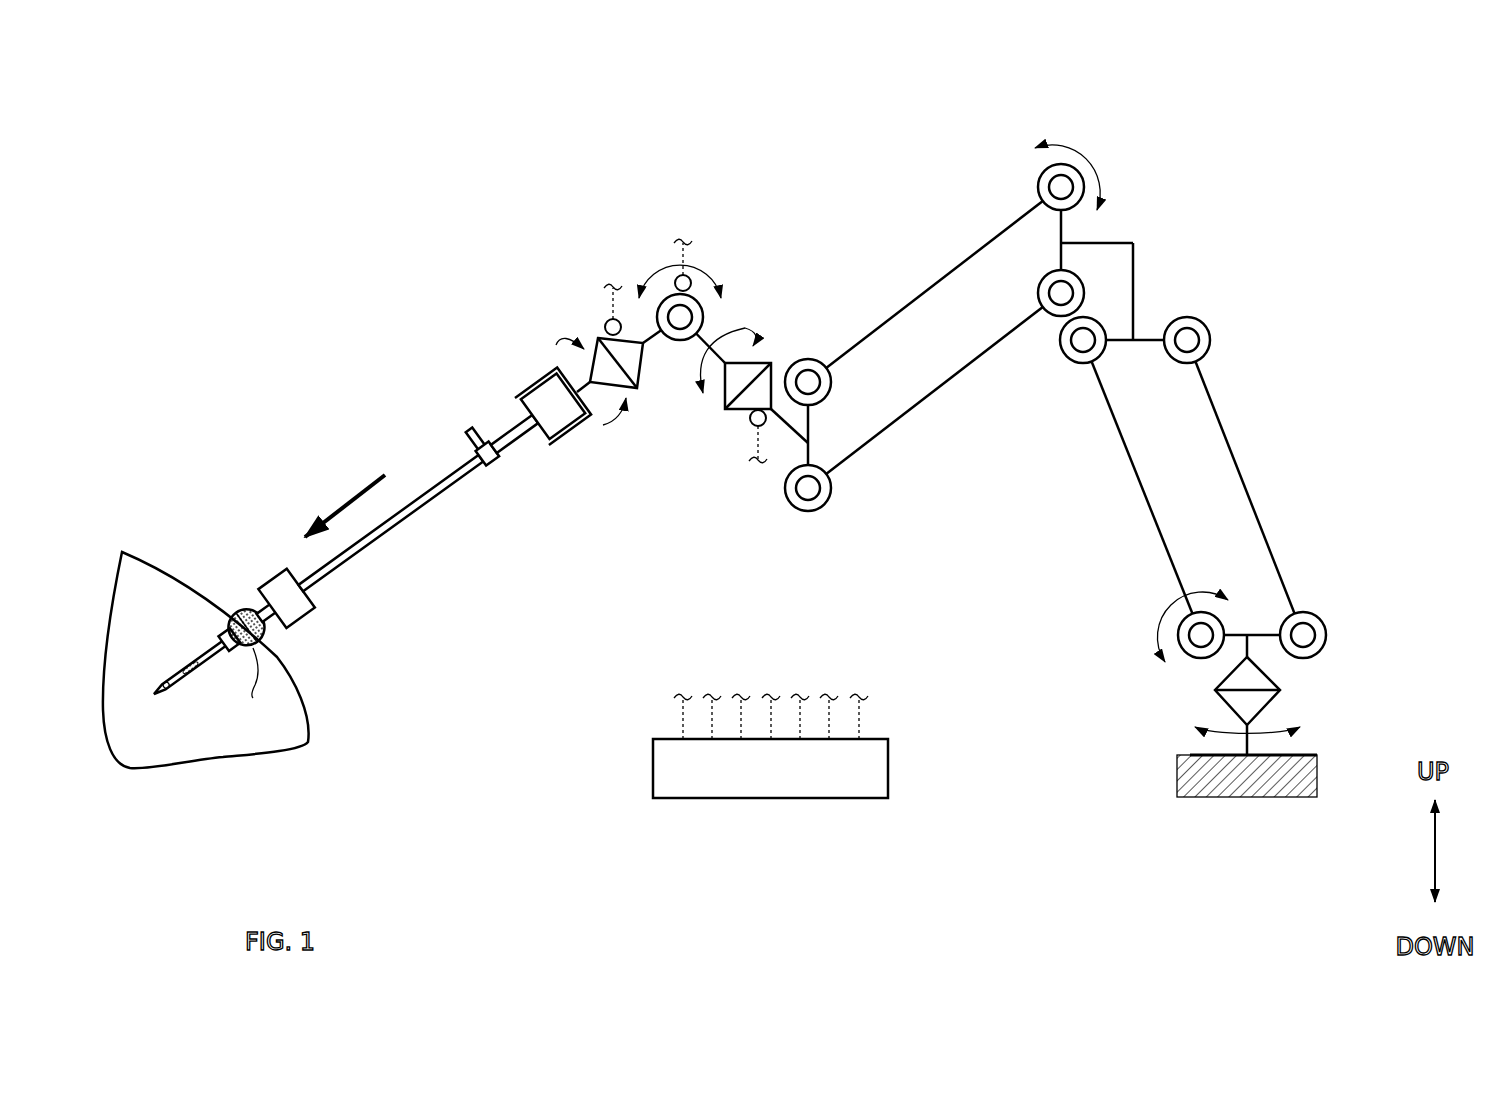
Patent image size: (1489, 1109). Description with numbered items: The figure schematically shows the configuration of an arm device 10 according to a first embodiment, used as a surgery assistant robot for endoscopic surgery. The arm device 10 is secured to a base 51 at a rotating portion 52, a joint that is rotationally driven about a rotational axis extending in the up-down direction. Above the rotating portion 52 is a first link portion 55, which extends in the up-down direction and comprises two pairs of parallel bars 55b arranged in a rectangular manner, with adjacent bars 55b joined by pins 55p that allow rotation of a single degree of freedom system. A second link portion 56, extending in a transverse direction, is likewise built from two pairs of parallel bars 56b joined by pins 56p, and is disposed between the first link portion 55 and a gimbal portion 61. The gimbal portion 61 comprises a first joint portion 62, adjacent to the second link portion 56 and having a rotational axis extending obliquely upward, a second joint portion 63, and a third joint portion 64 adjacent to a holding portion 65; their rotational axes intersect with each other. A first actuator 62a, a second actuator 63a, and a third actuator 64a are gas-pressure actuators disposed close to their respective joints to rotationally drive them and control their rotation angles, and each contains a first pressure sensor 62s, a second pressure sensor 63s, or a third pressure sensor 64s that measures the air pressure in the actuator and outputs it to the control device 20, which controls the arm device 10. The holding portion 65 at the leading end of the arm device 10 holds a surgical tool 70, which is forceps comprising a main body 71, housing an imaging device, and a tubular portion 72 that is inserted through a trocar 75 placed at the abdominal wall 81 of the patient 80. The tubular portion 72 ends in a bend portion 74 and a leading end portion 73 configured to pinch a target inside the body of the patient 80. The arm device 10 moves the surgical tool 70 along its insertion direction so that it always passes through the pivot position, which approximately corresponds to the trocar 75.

The arm device 10 is at (1325, 252).
The control device 20 is at (888, 768).
The base 51 is at (1190, 752).
The rotating portion 52 is at (1277, 697).
The first link portion 55 is at (1225, 462).
The bars 55b is at (1147, 338).
The pins 55p is at (1212, 338).
The second link portion 56 is at (991, 334).
The bars 56b is at (950, 272).
The pins 56p is at (1065, 163).
The gimbal portion 61 is at (657, 402).
The first joint portion 62 is at (738, 389).
The first actuator 62a is at (725, 410).
The first pressure sensor 62s is at (753, 430).
The second joint portion 63 is at (676, 328).
The second actuator 63a is at (641, 288).
The second pressure sensor 63s is at (690, 280).
The third joint portion 64 is at (575, 372).
The third actuator 64a is at (578, 337).
The third pressure sensor 64s is at (607, 320).
The holding portion 65 is at (553, 405).
The surgical tool 70 is at (361, 538).
The main body 71 is at (514, 434).
The tubular portion 72 is at (390, 523).
The leading end portion 73 is at (192, 665).
The bend portion 74 is at (246, 627).
The trocar 75 is at (286, 598).
The patient 80 is at (206, 599).
The abdominal wall 81 is at (180, 577).